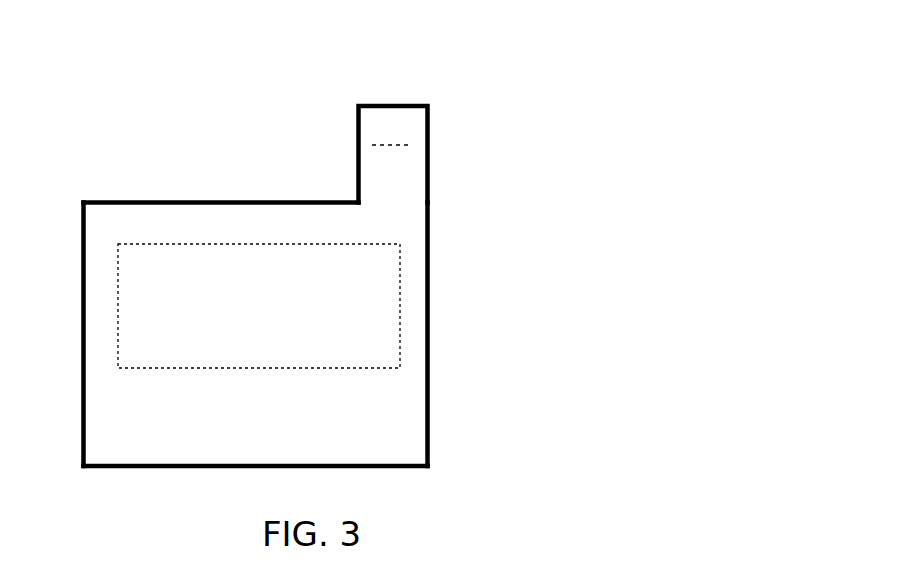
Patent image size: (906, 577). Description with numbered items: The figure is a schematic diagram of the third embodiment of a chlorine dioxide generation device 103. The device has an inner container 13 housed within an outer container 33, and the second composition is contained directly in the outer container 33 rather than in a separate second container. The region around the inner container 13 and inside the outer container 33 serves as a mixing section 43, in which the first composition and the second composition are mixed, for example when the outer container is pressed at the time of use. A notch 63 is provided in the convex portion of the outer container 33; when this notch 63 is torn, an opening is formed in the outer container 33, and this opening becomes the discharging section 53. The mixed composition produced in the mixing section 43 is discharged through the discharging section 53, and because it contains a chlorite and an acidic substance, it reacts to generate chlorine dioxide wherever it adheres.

The chlorine dioxide generation device 103 is at (449, 71).
The outer container 33 is at (138, 200).
The discharging section 53 is at (398, 143).
The notch 63 is at (413, 148).
The inner container 13 is at (395, 300).
The mixing section 43 is at (410, 388).